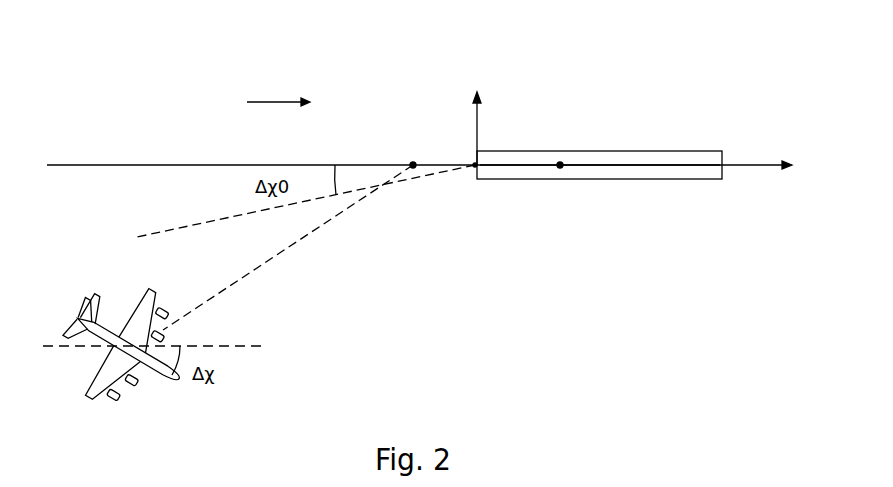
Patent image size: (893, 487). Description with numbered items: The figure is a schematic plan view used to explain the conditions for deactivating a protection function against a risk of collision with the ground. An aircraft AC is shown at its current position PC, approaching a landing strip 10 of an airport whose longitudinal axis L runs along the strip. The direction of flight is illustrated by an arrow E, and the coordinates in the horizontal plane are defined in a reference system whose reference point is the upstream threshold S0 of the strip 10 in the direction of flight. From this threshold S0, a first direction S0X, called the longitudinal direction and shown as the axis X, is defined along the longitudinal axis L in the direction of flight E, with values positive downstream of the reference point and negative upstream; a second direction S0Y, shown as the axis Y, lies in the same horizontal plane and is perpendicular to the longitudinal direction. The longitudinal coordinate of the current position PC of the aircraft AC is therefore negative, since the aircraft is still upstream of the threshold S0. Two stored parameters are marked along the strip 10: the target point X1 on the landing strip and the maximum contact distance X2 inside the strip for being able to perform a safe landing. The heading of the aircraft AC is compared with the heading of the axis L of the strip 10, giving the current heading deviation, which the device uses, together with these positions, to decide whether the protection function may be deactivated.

The landing strip 10 is at (670, 180).
The longitudinal axis L is at (633, 163).
The longitudinal direction X is at (419, 154).
The lateral direction Y is at (486, 128).
The target point X1 is at (294, 235).
The maximum contact distance X2 is at (560, 162).
The upstream threshold S0 is at (475, 163).
The direction of flight E is at (275, 100).
The aircraft AC is at (116, 325).
The current position PC is at (122, 390).